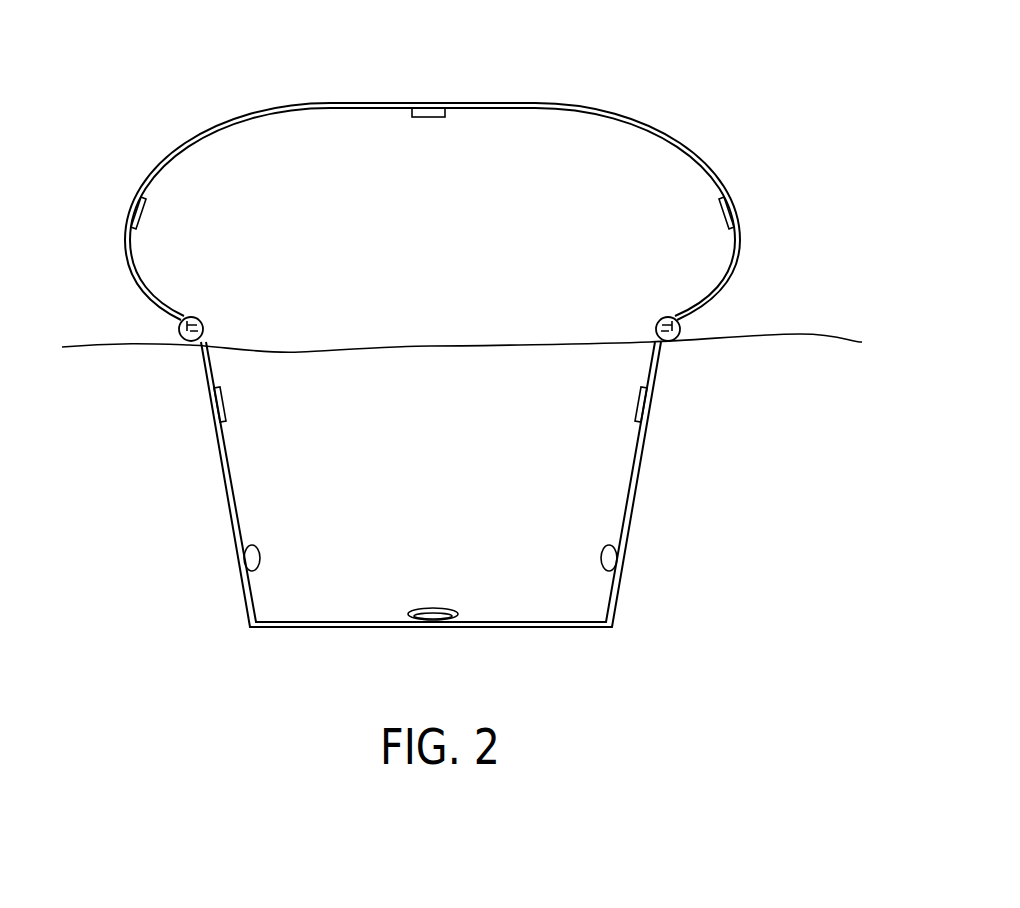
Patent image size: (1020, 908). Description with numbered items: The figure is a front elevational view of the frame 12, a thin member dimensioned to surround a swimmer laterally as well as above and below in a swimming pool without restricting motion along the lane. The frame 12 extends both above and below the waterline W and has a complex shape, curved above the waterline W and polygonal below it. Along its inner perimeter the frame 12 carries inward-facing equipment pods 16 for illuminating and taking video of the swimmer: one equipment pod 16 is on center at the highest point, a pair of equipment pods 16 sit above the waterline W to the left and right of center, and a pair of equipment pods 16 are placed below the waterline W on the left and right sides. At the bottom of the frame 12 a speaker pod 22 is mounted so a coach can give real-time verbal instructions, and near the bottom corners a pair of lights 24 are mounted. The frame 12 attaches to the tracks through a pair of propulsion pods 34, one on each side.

The frame 12 is at (583, 75).
The equipment pods 16 is at (430, 118).
The propulsion pods 34 is at (179, 333).
The waterline W is at (790, 340).
The lights 24 is at (262, 560).
The speaker pod 22 is at (435, 607).